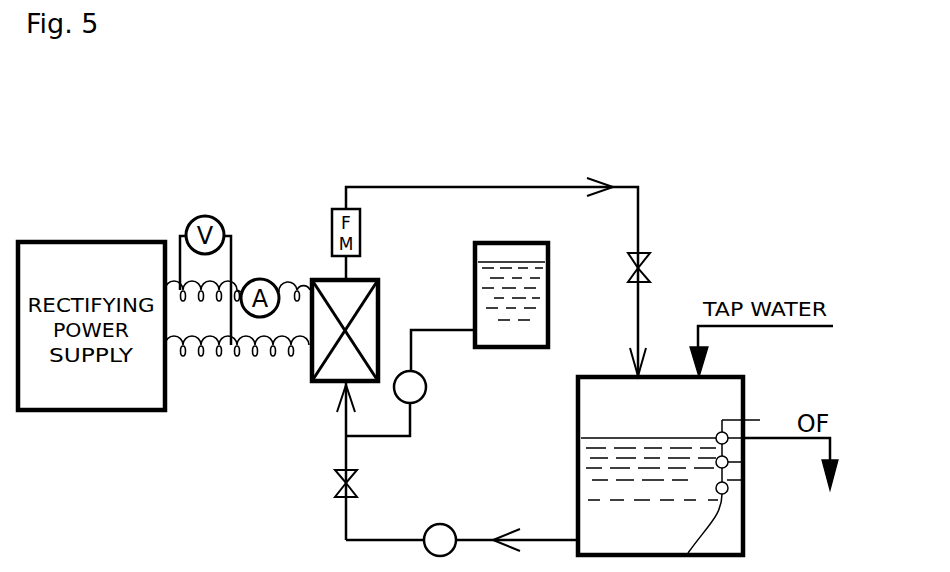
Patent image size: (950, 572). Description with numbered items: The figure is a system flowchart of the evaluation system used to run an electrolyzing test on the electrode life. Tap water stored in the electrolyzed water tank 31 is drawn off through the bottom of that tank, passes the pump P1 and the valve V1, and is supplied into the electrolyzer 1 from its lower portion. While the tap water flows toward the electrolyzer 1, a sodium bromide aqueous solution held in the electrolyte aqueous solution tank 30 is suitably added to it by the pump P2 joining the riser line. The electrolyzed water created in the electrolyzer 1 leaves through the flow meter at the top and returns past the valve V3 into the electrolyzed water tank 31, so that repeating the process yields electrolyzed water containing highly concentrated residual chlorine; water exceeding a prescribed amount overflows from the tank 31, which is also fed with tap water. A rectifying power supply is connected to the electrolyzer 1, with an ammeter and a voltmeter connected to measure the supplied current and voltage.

The electrolyzer 1 is at (381, 298).
The electrolyte aqueous solution tank 30 is at (513, 349).
The electrolyzed water tank 31 is at (744, 511).
The valve V1 is at (328, 484).
The valve V3 is at (616, 268).
The pump P1 is at (438, 523).
The pump P2 is at (424, 407).